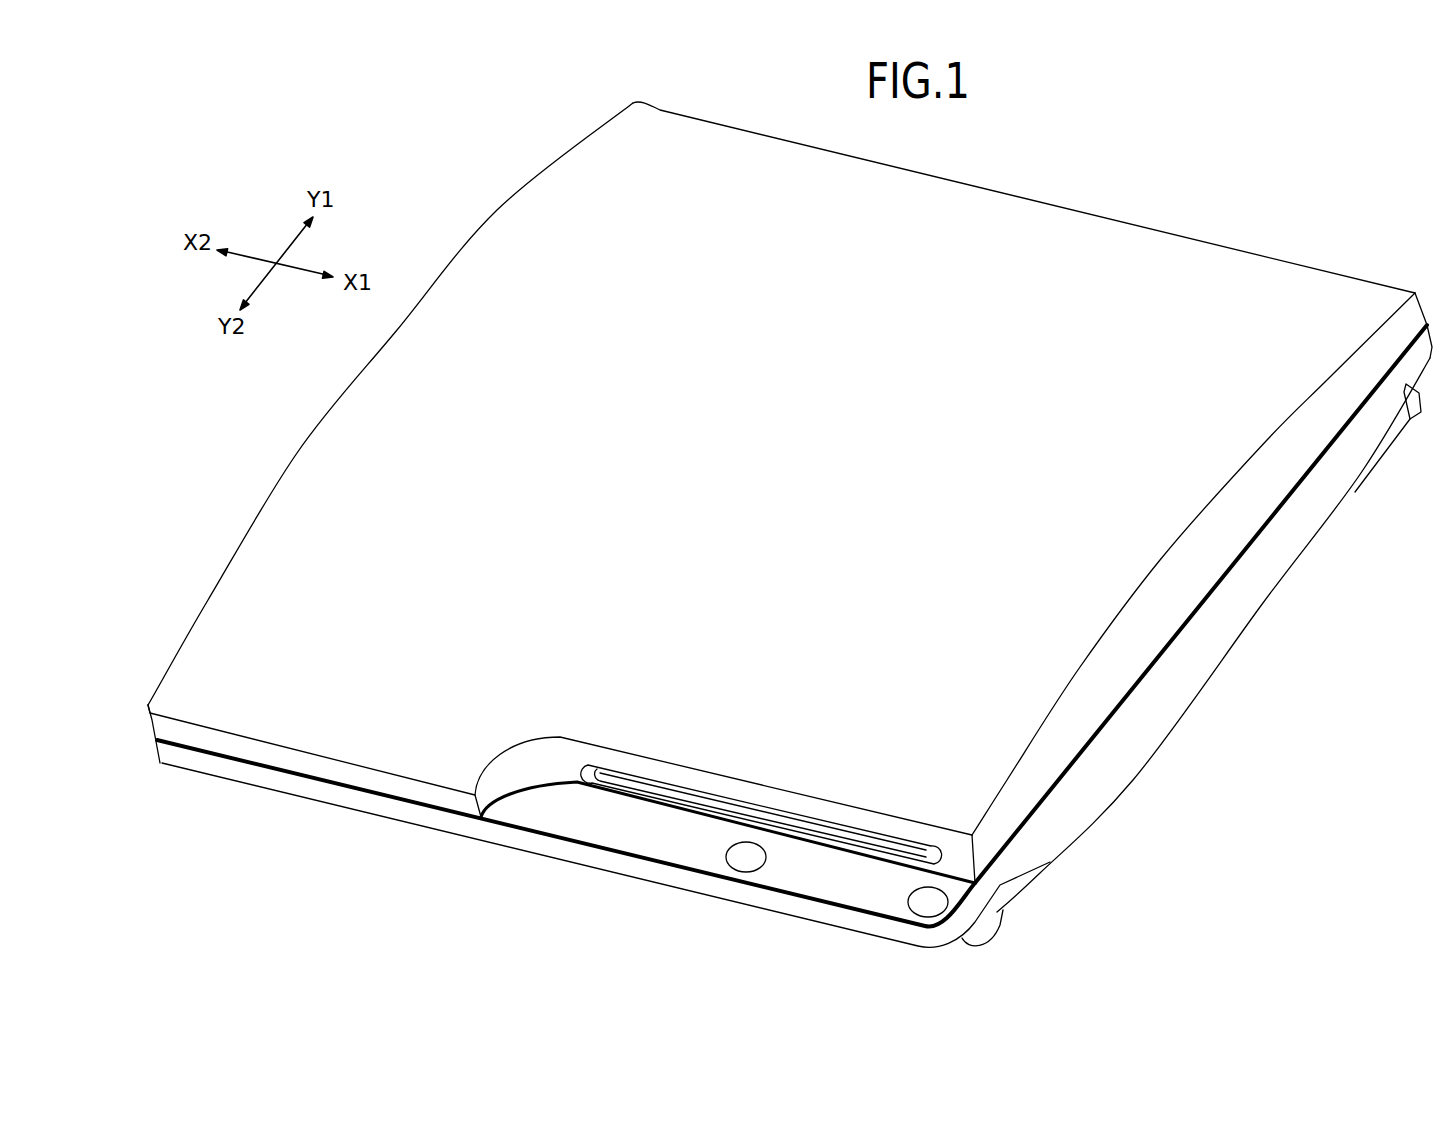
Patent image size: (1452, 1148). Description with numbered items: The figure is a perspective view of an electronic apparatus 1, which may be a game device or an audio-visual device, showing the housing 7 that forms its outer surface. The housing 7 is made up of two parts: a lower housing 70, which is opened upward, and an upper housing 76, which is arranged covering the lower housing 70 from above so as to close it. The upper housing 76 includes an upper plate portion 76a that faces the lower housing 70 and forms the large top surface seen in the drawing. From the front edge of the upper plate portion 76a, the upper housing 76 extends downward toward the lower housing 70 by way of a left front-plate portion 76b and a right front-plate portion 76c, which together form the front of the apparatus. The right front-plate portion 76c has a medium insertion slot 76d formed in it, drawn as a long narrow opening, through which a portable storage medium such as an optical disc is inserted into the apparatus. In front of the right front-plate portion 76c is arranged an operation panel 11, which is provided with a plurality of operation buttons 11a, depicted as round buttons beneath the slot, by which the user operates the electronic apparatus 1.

The electronic apparatus 1 is at (1042, 178).
The housing 7 is at (1372, 637).
The lower housing 70 is at (1215, 635).
The upper housing 76 is at (1193, 567).
The upper plate portion 76a is at (773, 457).
The left front-plate portion 76b is at (303, 762).
The right front-plate portion 76c is at (710, 782).
The medium insertion slot 76d is at (640, 782).
The operation panel 11 is at (828, 878).
The operation buttons 11a is at (745, 855).